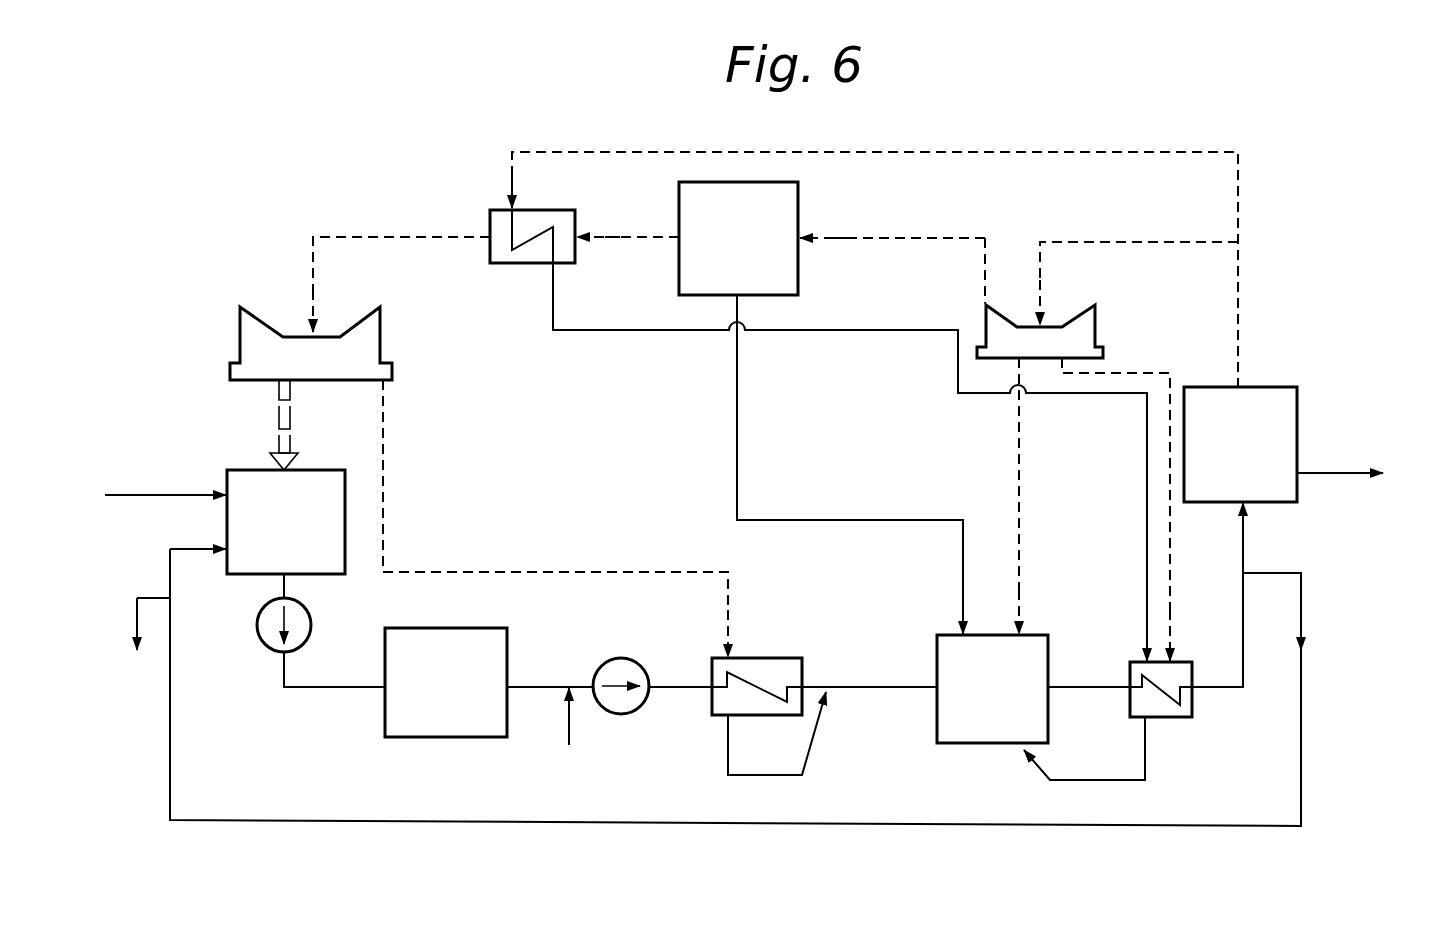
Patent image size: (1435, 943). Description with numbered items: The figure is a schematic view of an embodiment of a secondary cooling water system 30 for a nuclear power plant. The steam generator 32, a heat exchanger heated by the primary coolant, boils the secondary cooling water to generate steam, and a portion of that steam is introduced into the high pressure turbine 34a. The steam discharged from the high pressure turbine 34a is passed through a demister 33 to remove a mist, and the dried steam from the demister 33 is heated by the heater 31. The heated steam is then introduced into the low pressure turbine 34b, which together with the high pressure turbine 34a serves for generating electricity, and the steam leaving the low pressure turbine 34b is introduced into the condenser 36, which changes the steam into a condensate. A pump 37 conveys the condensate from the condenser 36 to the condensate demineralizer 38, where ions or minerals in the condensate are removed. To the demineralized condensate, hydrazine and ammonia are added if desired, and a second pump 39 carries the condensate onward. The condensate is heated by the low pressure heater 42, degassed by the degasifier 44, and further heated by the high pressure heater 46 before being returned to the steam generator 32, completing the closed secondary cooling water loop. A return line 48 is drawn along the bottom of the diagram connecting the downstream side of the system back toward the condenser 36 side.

The secondary cooling water system 30 is at (1340, 573).
The heater 31 is at (478, 214).
The steam generator 32 is at (1300, 423).
The demister 33 is at (800, 213).
The high pressure turbine 34a is at (1098, 331).
The low pressure turbine 34b is at (385, 348).
The condenser 36 is at (320, 468).
The pump 37 is at (272, 655).
The condensate demineralizer 38 is at (442, 742).
The pump 39 is at (630, 715).
The low pressure heater 42 is at (802, 662).
The degasifier 44 is at (958, 748).
The high pressure heater 46 is at (1193, 712).
The return line 48 is at (495, 823).